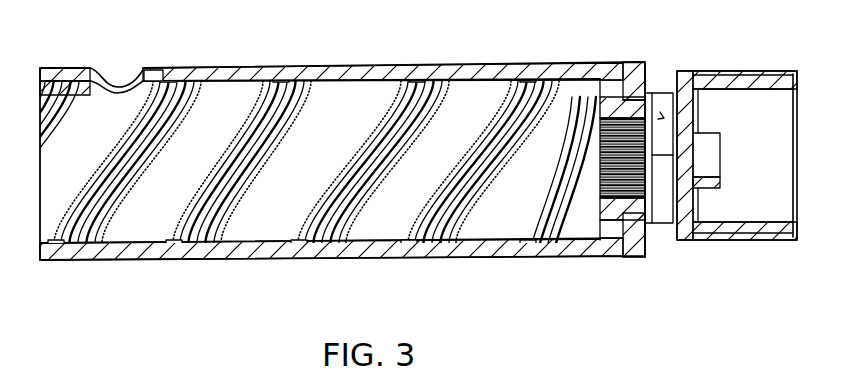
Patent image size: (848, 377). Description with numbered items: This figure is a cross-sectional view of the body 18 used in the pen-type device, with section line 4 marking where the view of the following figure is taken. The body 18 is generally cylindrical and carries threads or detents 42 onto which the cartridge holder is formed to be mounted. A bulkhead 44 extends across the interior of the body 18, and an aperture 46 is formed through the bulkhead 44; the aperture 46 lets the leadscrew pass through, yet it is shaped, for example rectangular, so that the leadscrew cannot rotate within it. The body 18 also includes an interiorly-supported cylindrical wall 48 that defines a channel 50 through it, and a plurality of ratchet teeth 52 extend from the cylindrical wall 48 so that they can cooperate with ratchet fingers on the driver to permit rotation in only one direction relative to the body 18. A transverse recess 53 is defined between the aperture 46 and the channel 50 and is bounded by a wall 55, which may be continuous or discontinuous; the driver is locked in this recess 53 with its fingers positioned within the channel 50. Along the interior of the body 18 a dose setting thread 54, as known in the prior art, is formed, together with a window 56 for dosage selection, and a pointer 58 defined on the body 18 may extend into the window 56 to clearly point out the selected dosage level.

The body 18 is at (386, 46).
The threads or detents 42 is at (737, 185).
The bulkhead 44 is at (700, 207).
The aperture 46 is at (693, 164).
The cylindrical wall 48 is at (600, 104).
The channel 50 is at (663, 158).
The ratchet teeth 52 is at (600, 136).
The transverse recess 53 is at (660, 112).
The dose setting thread 54 is at (243, 147).
The wall 55 is at (656, 226).
The window 56 is at (117, 80).
The pointer 58 is at (156, 70).
The section line 4- 4 is at (635, 50).